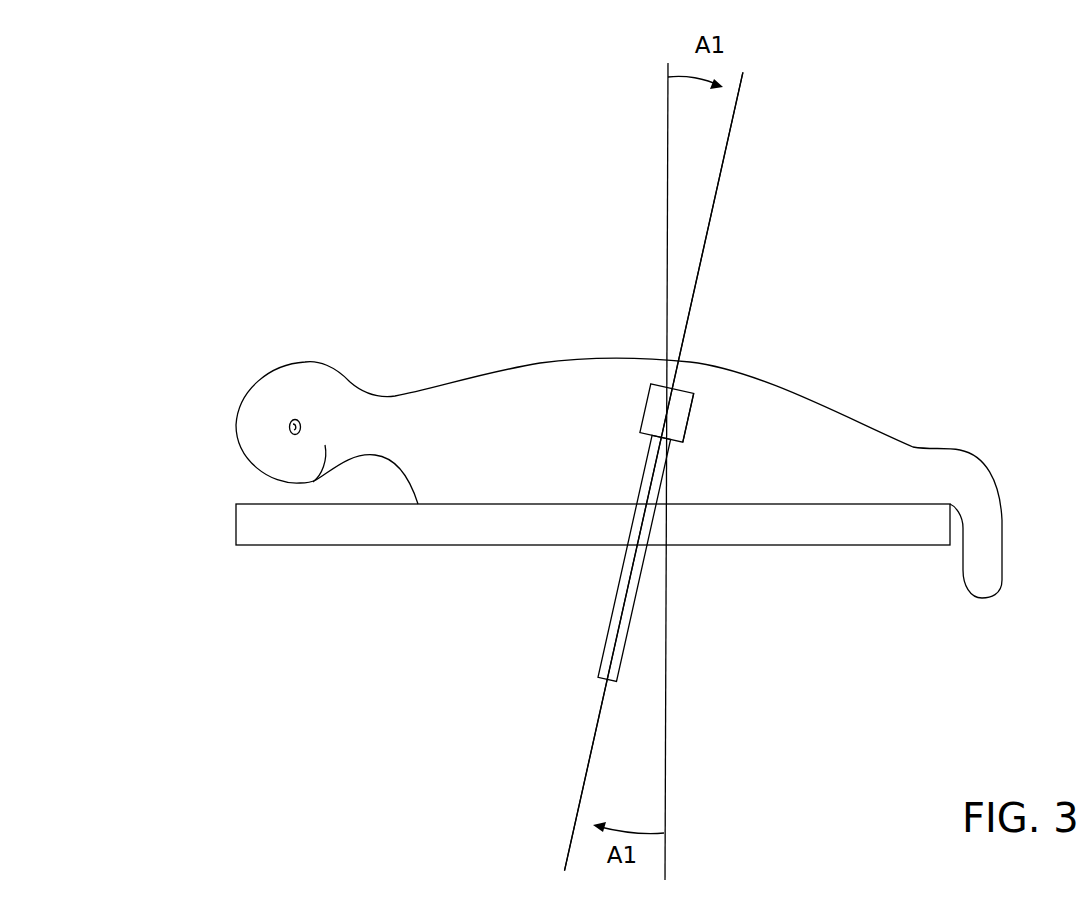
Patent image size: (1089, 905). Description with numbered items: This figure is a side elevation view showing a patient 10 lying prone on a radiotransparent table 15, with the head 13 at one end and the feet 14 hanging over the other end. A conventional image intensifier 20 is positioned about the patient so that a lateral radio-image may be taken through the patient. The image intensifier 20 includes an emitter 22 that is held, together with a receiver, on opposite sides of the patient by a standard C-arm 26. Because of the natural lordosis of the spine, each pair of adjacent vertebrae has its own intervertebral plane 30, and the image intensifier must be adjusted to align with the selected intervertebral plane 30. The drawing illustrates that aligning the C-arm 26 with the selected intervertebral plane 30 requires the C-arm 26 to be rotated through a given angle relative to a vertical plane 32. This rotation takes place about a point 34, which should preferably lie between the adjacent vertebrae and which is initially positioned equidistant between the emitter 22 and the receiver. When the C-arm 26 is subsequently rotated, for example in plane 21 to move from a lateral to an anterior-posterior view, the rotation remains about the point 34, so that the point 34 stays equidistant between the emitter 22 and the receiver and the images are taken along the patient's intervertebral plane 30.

The patient 10 is at (482, 367).
The head 13 is at (262, 393).
The feet 14 is at (983, 532).
The radiotransparent table 15 is at (402, 532).
The image intensifier 20 is at (584, 575).
The plane 21 is at (838, 142).
The emitter 22 is at (683, 418).
The C-arm 26 is at (607, 650).
The intervertebral plane 30 is at (723, 165).
The vertical plane 32 is at (668, 145).
The point 34 is at (645, 412).